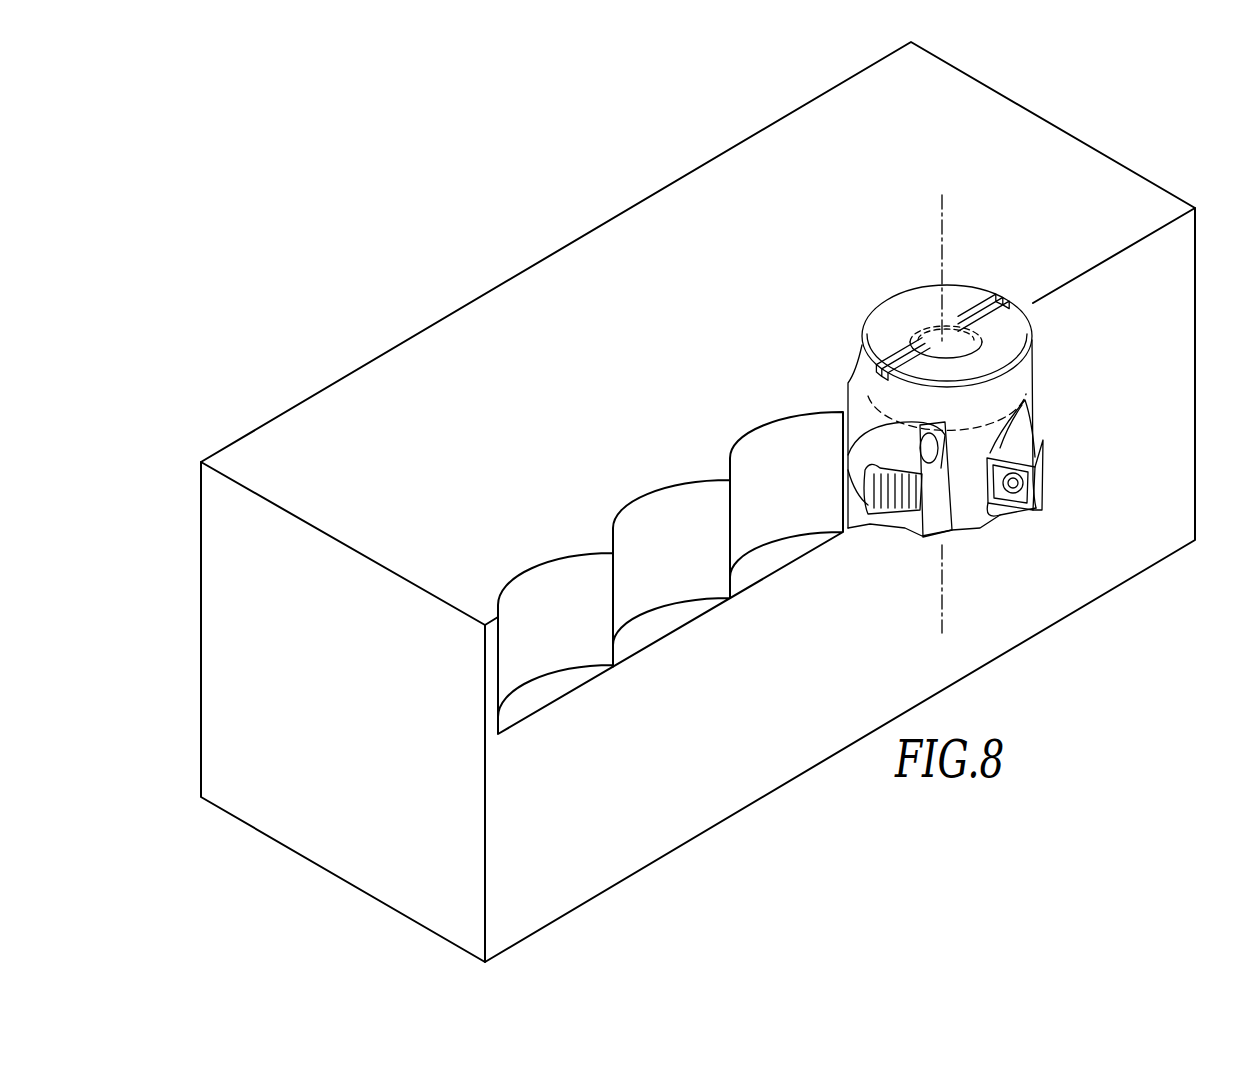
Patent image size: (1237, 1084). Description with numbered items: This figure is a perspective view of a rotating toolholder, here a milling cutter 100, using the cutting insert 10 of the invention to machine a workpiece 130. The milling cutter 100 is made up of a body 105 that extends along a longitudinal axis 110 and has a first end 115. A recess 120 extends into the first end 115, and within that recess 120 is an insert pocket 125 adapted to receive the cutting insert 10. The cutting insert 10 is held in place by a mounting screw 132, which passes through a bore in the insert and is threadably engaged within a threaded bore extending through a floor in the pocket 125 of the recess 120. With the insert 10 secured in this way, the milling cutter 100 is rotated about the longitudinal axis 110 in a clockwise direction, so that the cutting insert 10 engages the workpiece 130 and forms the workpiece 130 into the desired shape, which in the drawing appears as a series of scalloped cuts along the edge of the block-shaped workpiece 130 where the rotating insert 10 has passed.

The milling cutter 100 is at (895, 284).
The body 105 is at (880, 337).
The longitudinal axis 110 is at (942, 247).
The first end 115 is at (900, 517).
The recess 120 is at (1025, 397).
The insert pocket 125 is at (1040, 463).
The cutting insert 10 is at (1040, 500).
The mounting screw 132 is at (1013, 494).
The workpiece 130 is at (590, 425).